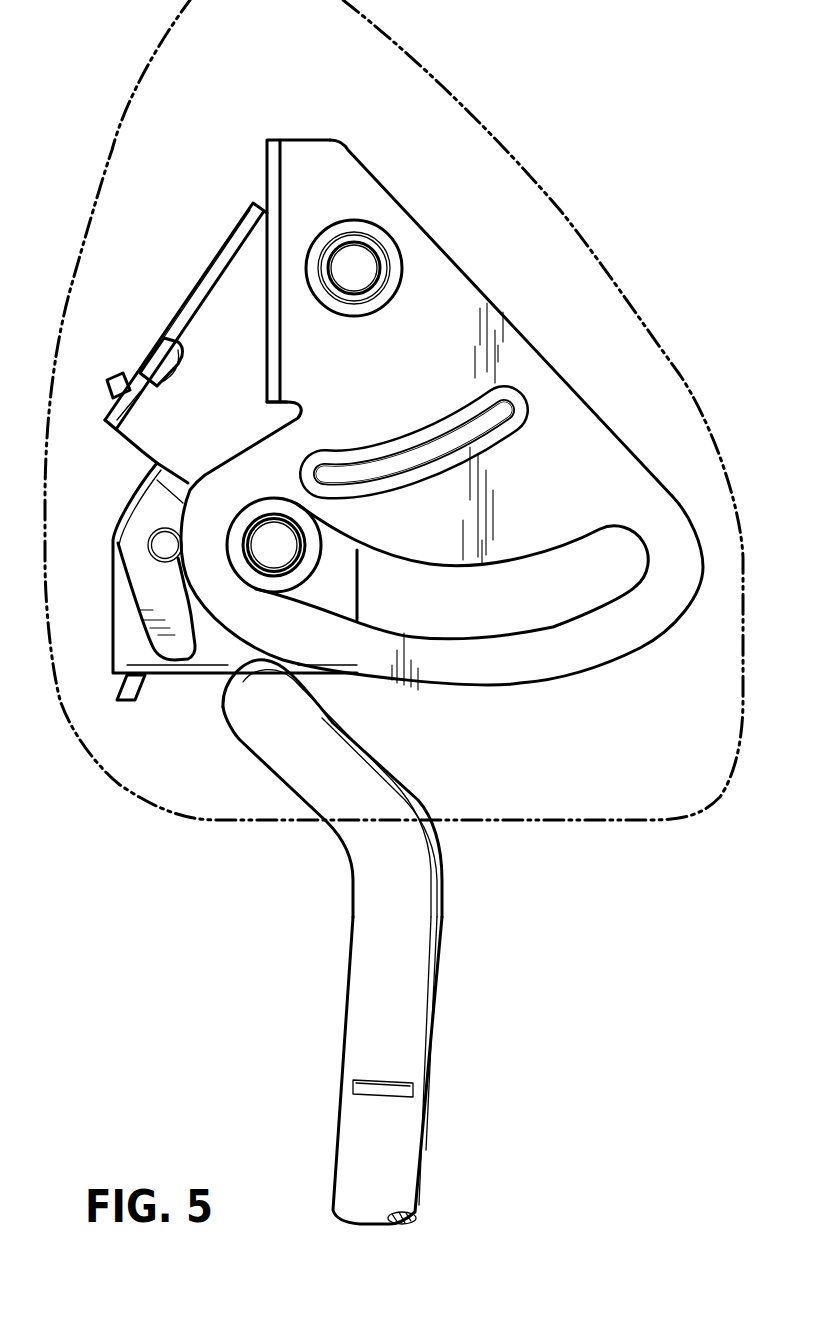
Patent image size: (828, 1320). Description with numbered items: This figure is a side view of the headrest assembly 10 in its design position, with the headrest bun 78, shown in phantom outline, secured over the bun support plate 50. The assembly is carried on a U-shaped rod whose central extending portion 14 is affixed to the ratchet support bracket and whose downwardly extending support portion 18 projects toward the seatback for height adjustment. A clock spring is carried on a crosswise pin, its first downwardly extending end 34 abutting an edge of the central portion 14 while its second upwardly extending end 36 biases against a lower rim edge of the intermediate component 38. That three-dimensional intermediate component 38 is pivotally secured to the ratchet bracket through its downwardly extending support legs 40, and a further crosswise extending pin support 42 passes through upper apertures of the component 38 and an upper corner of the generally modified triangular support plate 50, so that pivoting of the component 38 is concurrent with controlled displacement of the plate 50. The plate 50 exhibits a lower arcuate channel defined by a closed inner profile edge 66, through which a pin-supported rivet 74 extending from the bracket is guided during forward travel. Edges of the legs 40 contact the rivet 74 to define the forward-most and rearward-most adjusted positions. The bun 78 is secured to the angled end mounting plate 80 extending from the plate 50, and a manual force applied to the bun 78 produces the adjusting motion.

The locking assembly 10 is at (464, 216).
The central extending portion 14 is at (221, 707).
The downwardly extending support portion 18 is at (365, 948).
The first downwardly extending end 34 is at (117, 720).
The second upwardly extending end 36 is at (112, 378).
The intermediate component 38 is at (240, 303).
The support legs 40 is at (157, 600).
The crosswise extending pin support 42 is at (355, 267).
The headrest bun support plate 50 is at (573, 460).
The closed inner profile edge 66 is at (539, 622).
The rivet 74 is at (300, 557).
The headrest bun 78 is at (433, 72).
The angled end mounting plate 80 is at (287, 210).